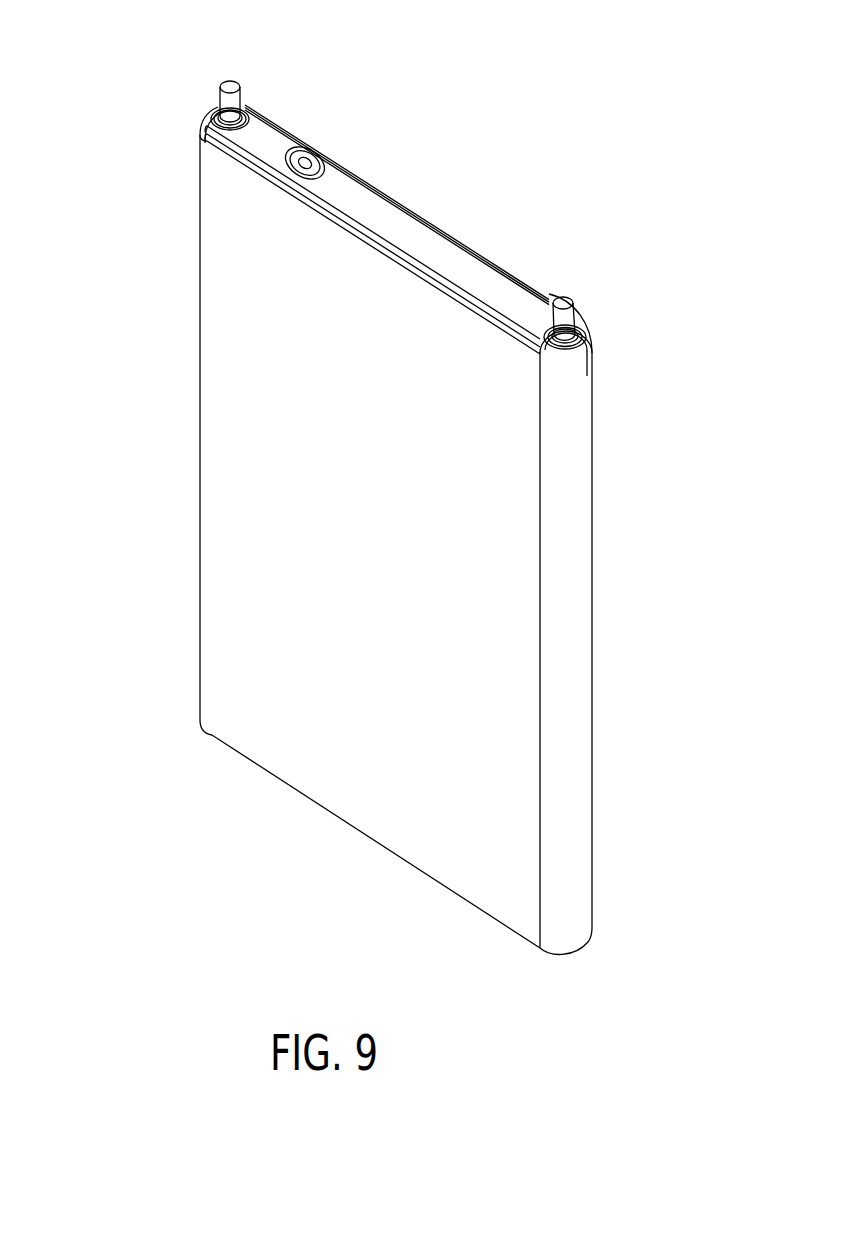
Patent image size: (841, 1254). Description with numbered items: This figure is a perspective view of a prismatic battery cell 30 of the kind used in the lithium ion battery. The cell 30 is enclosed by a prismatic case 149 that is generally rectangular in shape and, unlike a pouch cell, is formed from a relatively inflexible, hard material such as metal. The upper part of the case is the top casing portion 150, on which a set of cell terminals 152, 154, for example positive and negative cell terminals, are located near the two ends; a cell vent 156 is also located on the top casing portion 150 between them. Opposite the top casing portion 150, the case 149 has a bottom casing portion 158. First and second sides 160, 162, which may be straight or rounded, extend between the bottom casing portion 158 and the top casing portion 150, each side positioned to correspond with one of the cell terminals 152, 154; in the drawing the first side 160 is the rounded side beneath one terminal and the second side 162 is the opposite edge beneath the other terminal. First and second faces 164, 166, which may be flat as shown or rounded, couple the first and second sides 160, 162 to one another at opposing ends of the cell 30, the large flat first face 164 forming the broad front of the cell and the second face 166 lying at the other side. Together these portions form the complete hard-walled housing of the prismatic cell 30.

The battery cell 30 is at (131, 736).
The prismatic case 149 is at (658, 421).
The top casing portion 150 is at (490, 207).
The cell terminal 152 is at (224, 103).
The cell terminal 154 is at (565, 320).
The cell vent 156 is at (366, 203).
The bottom casing portion 158 is at (370, 840).
The first side 160 is at (566, 630).
The second side 162 is at (200, 427).
The first face 164 is at (502, 813).
The second face 166 is at (605, 703).